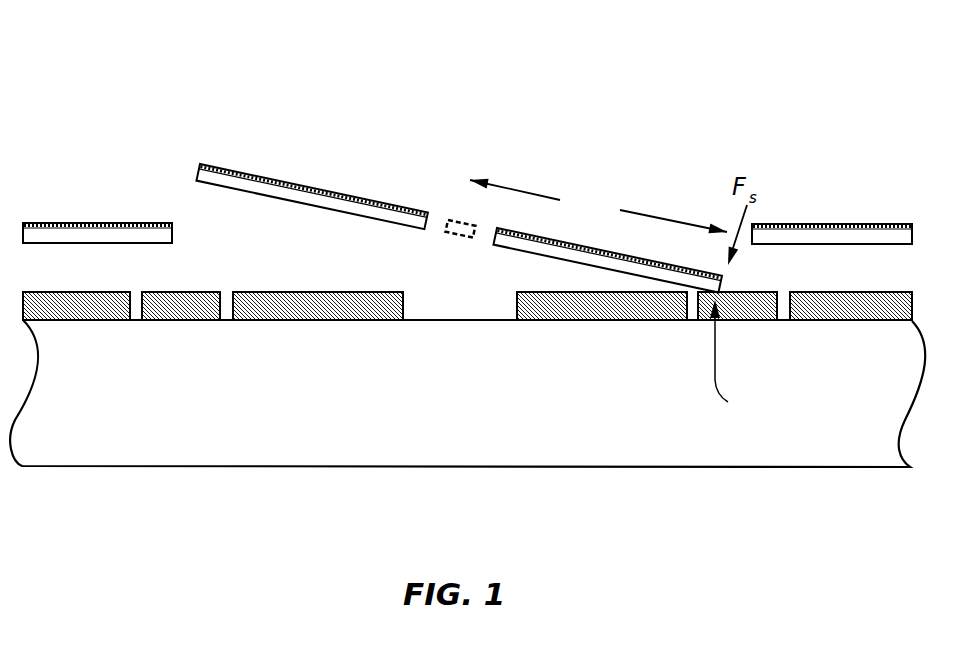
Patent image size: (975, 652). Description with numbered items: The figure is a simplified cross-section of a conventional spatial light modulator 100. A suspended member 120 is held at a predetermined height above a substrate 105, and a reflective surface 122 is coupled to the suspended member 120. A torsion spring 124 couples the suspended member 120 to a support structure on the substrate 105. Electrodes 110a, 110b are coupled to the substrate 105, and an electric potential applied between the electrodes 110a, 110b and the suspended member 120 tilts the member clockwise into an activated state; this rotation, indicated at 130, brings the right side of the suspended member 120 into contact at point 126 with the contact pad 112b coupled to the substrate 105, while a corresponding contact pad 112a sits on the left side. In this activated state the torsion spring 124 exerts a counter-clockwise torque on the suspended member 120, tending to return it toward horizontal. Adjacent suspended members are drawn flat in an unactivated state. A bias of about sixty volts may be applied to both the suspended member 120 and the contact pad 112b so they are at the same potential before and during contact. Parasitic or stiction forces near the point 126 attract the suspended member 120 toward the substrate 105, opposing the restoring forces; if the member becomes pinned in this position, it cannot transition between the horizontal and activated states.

The micro-mirror device 100 is at (702, 80).
The substrate 105 is at (838, 448).
The electrode 110a is at (313, 308).
The electrode 110b is at (602, 308).
The contact pad 112a is at (181, 305).
The contact pad 112b is at (733, 310).
The suspended member 120 is at (260, 187).
The reflective surface 122 is at (323, 186).
The torsion spring 124 is at (457, 237).
The contact point 126 is at (743, 358).
The movement direction 130 is at (598, 206).